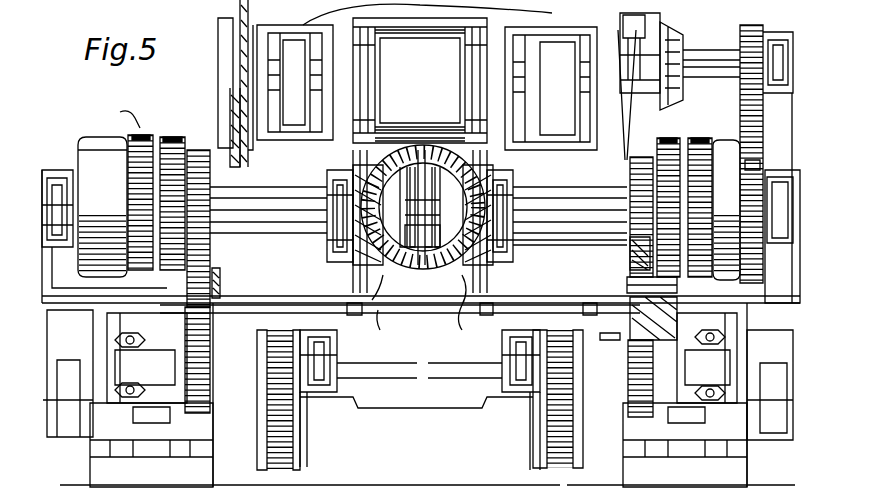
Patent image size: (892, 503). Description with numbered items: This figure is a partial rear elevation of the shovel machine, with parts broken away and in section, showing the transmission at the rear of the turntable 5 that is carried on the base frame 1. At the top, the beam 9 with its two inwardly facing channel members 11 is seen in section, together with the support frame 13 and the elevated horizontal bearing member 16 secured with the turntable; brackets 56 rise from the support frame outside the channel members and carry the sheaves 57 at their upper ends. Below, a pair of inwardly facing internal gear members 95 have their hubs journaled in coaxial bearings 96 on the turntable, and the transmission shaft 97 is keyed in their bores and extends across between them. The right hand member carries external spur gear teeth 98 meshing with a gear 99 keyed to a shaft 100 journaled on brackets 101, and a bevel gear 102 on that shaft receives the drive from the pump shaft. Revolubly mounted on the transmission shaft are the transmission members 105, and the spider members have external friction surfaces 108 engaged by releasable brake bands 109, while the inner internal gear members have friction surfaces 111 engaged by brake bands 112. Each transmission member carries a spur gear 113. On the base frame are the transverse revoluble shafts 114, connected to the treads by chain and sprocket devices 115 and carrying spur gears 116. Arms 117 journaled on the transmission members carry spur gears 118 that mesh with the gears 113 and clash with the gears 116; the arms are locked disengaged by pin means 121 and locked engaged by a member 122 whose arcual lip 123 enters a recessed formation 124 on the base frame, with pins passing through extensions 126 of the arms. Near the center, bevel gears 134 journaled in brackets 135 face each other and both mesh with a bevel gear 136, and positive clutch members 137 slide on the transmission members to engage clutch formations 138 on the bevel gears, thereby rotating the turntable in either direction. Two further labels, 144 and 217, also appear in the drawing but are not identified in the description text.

The base frame 1 is at (457, 410).
The turntable 5 is at (544, 189).
The beam 9 is at (288, 96).
The channel members 11 is at (285, 73).
The support frame 13 is at (487, 63).
The bearing member 16 is at (420, 80).
The brackets 56 is at (236, 14).
The sheaves 57 is at (249, 9).
The internal gear members 95 is at (86, 137).
The bearings 96 is at (42, 168).
The transmission shaft 97 is at (437, 250).
The external spur gear teeth 98 is at (760, 160).
The gear 99 is at (765, 125).
The shaft 100 is at (705, 75).
The brackets 101 is at (800, 67).
The bevel gear 102 is at (683, 30).
The transmission members 105 is at (312, 186).
The external friction surfaces 108 is at (140, 158).
The brake bands 109 is at (795, 147).
The external friction surfaces 111 is at (178, 135).
The brake bands 112 is at (140, 133).
The spur gear 113 is at (205, 158).
The revoluble shafts 114 is at (255, 435).
The chain and sprocket devices 115 is at (548, 420).
The spur gears 116 is at (300, 472).
The arms 117 is at (300, 184).
The spur gears 118 is at (222, 285).
The pin means 121 is at (625, 285).
The member 122 is at (347, 310).
The arcual lip 123 is at (255, 335).
The recessed formation 124 is at (195, 405).
The extensions 126 is at (222, 270).
The bevel gears 134 is at (437, 145).
The brackets 135 is at (310, 247).
The bevel gear 136 is at (370, 317).
The positive clutch members 137 is at (403, 250).
The positive clutch formations 138 is at (410, 345).
The gear 144 is at (600, 337).
The lead 217 is at (441, 14).